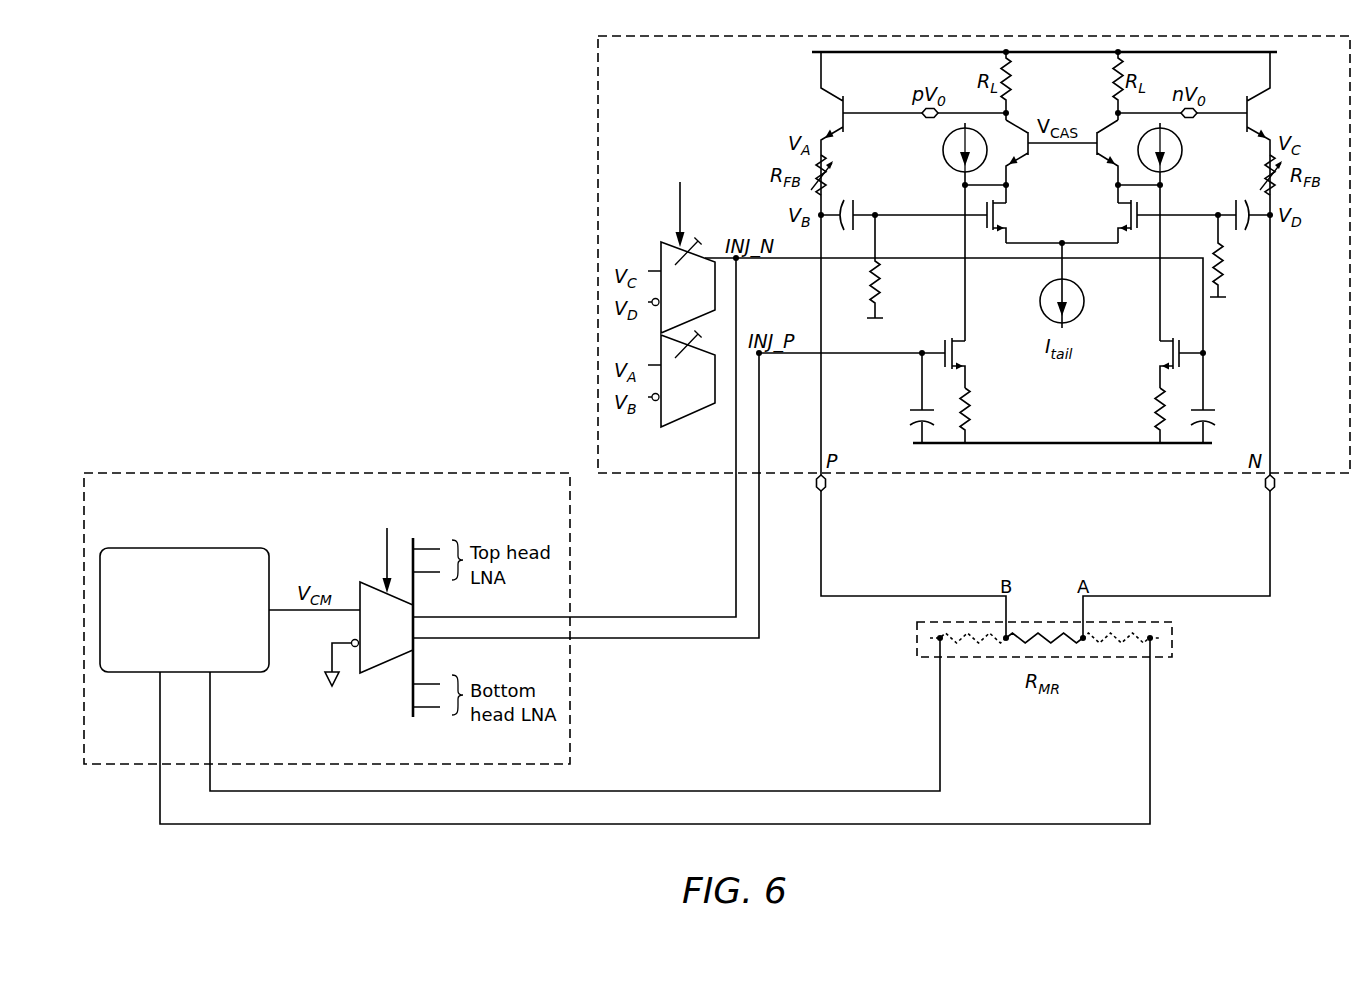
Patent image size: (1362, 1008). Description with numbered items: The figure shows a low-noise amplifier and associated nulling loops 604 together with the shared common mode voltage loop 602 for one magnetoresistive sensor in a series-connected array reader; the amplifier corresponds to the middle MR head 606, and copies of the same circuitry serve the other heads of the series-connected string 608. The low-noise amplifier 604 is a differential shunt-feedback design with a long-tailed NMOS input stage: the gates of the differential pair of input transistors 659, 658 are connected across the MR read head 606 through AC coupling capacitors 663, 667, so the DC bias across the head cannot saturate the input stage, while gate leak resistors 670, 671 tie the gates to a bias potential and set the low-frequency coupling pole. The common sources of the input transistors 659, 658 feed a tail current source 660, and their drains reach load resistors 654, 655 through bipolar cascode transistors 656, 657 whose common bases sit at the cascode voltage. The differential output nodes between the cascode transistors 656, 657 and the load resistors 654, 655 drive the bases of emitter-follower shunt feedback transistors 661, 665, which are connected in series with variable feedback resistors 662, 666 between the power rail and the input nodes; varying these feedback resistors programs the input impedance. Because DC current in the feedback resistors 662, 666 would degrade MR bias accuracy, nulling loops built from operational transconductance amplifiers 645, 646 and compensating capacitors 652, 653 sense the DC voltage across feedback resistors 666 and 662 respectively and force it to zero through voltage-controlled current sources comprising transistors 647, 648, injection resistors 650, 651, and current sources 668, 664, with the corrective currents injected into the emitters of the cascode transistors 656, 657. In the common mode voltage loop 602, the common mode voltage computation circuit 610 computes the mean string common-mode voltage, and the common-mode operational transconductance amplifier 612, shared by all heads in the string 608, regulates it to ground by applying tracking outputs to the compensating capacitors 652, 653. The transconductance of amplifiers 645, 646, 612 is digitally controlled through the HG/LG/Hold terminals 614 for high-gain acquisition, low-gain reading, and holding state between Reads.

The common mode voltage loop 602 is at (327, 618).
The low-noise amplifier and associated nulling loops 604 is at (974, 254).
The MR head 606 is at (1042, 637).
The series-connected string 608 is at (1172, 637).
The common mode voltage computation circuit 610 is at (184, 610).
The common-mode operational transconductance amplifier 612 is at (542, 472).
The HG/LG/Hold terminals 614 is at (680, 209).
The operational transconductance amplifier 645 is at (681, 286).
The operational transconductance amplifier 646 is at (681, 379).
The transistor 647 is at (1179, 340).
The transistor 648 is at (945, 340).
The injection resistor 650 is at (1160, 398).
The injection resistor 651 is at (965, 414).
The compensating capacitor 652 is at (1204, 410).
The compensating capacitor 653 is at (915, 412).
The load resistor 654 is at (1007, 76).
The load resistor 655 is at (1116, 92).
The cascode transistor 656 is at (1029, 167).
The cascode transistor 657 is at (1095, 167).
The input transistor 658 is at (987, 228).
The input transistor 659 is at (1137, 228).
The tail current source 660 is at (1040, 308).
The shunt feedback transistor 661 is at (838, 97).
The feedback resistor 662 is at (831, 180).
The AC coupling capacitor 663 is at (857, 213).
The current source 664 is at (943, 148).
The shunt feedback transistor 665 is at (1247, 97).
The feedback resistor 666 is at (1264, 184).
The AC coupling capacitor 667 is at (1234, 206).
The current source 668 is at (1182, 162).
The gate leak resistor 670 is at (882, 285).
The gate leak resistor 671 is at (1219, 260).